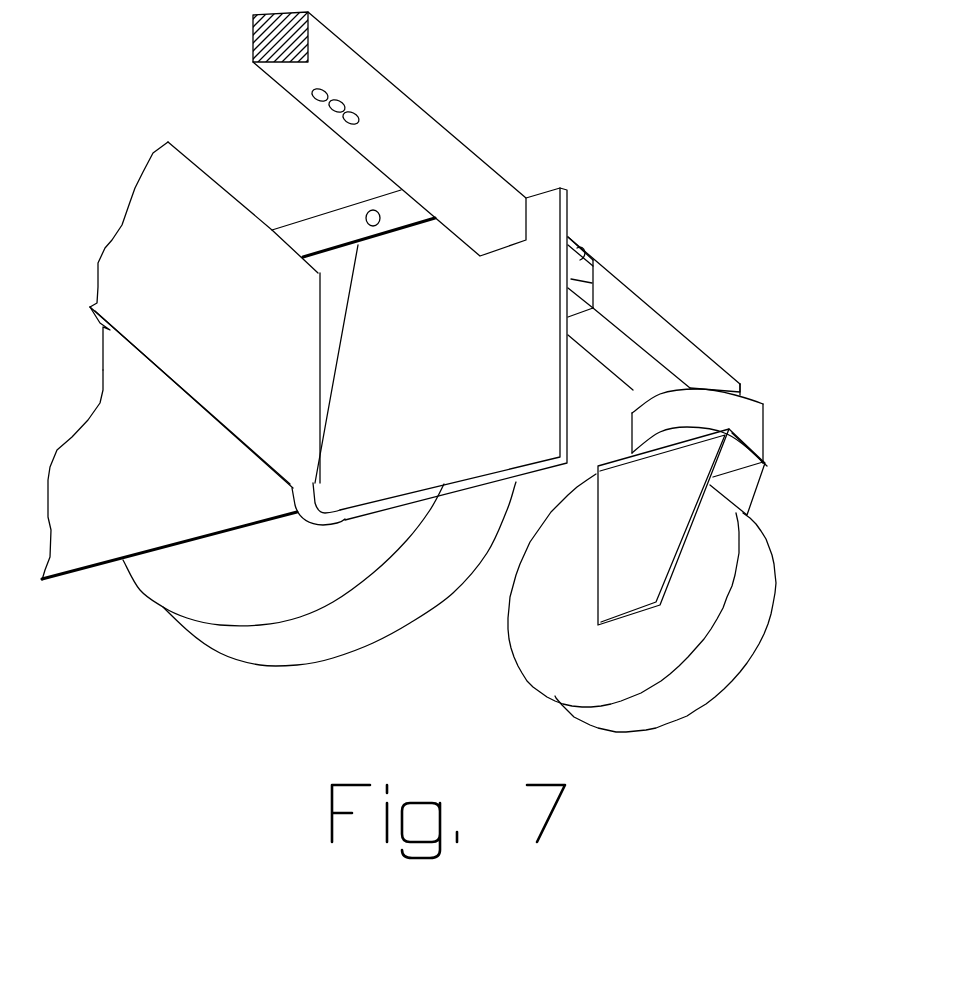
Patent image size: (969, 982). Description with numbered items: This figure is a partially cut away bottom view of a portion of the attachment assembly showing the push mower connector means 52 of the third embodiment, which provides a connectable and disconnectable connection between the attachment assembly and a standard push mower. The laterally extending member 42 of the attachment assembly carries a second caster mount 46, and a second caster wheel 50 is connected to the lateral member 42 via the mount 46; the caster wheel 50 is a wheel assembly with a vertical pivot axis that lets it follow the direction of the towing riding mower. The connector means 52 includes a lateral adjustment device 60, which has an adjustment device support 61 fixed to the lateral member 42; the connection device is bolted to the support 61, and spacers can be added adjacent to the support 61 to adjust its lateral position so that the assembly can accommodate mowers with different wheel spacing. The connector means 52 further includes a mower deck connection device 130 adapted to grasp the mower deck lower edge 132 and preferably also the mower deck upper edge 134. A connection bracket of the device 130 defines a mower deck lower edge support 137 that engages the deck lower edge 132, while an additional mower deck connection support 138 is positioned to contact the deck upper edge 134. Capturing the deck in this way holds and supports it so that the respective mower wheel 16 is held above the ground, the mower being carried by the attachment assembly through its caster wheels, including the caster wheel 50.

The wheel 16 is at (169, 577).
The laterally extending member 42 is at (440, 148).
The second caster mount 46 is at (700, 350).
The second caster wheel 50 is at (645, 650).
The push mower connector means 52 is at (565, 182).
The lateral adjustment device 60 is at (582, 260).
The adjustment device support 61 is at (578, 282).
The mower deck connection device 130 is at (291, 336).
The mower deck lower edge 132 is at (223, 420).
The mower deck upper edge 134 is at (187, 207).
The mower deck lower edge support 137 is at (338, 517).
The additional mower deck connection support 138 is at (333, 228).